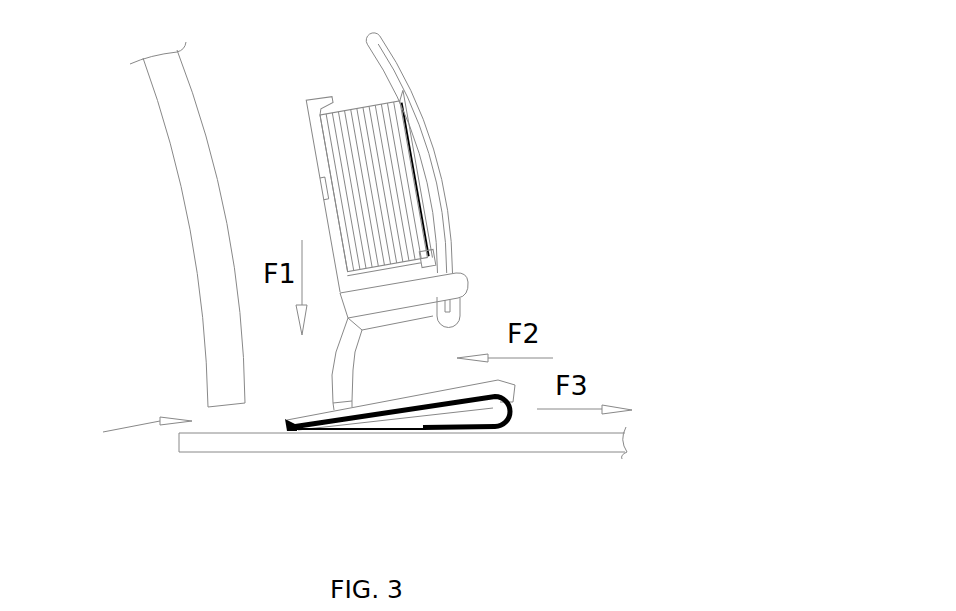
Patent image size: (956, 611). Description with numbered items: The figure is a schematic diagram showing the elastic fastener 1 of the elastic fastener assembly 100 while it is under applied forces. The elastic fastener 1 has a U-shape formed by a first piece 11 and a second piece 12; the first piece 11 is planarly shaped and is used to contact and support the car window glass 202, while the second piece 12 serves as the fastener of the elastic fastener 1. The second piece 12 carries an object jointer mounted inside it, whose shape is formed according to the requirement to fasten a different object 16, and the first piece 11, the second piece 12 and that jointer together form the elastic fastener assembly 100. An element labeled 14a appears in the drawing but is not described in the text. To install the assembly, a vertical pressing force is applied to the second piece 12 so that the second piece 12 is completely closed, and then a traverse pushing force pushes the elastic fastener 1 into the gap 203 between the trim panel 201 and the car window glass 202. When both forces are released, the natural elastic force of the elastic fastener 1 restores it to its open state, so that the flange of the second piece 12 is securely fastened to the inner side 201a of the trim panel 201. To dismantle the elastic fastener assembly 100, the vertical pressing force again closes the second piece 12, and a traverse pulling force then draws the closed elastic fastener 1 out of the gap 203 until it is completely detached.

The elastic fastener assembly 100 is at (488, 102).
The object 16 is at (432, 176).
The elastic fastener 1 is at (495, 405).
The first piece 11 is at (415, 432).
The second piece 12 is at (408, 405).
The support leg 14a is at (333, 366).
The trim panel 201 is at (143, 224).
The inner side of the trim panel 201a is at (205, 378).
The gap 203 is at (125, 431).
The car window glass 202 is at (267, 452).